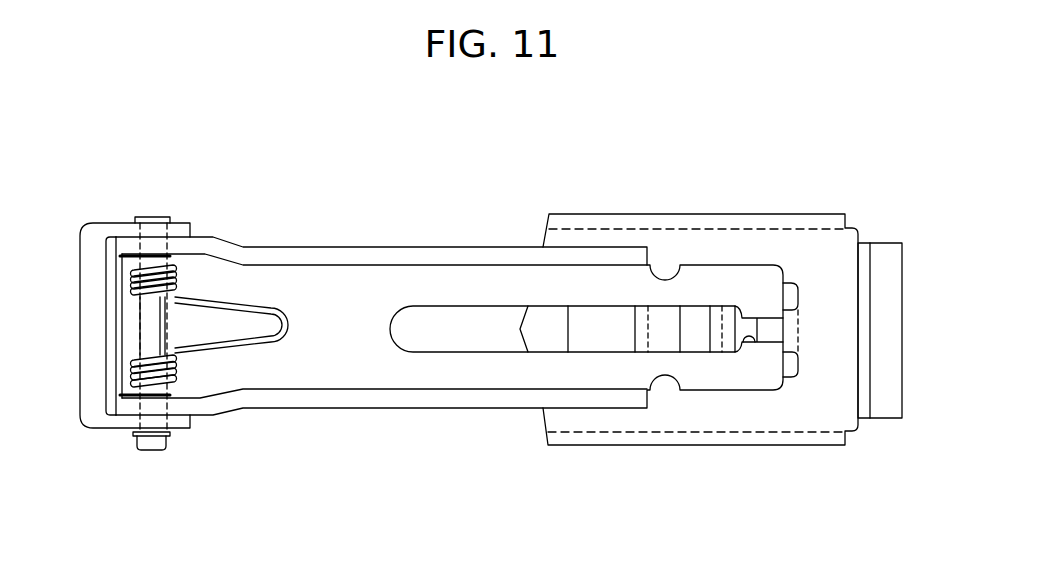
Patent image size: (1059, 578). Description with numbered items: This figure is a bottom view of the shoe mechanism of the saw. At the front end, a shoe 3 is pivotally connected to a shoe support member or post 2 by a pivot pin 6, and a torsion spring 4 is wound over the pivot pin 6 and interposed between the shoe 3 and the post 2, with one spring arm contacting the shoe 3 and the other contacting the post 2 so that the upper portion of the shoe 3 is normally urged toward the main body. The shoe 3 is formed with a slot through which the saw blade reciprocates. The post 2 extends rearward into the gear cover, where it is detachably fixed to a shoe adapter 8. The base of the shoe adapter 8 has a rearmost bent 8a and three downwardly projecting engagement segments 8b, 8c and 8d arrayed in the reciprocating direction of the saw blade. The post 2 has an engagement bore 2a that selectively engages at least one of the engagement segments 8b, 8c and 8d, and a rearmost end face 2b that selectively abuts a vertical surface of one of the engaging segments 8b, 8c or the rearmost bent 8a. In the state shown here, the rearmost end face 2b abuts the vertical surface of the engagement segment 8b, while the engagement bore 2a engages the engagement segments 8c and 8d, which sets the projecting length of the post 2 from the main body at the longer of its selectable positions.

The post 2 is at (355, 395).
The engagement bore 2a is at (755, 342).
The rearmost end face 2b is at (795, 288).
The shoe 3 is at (95, 413).
The torsion spring 4 is at (175, 385).
The pivot pin 6 is at (150, 442).
The shoe adapter 8 is at (570, 227).
The rearmost bent 8a is at (855, 364).
The engagement segment 8b is at (785, 328).
The engagement segment 8c is at (708, 333).
The engagement segment 8d is at (633, 333).